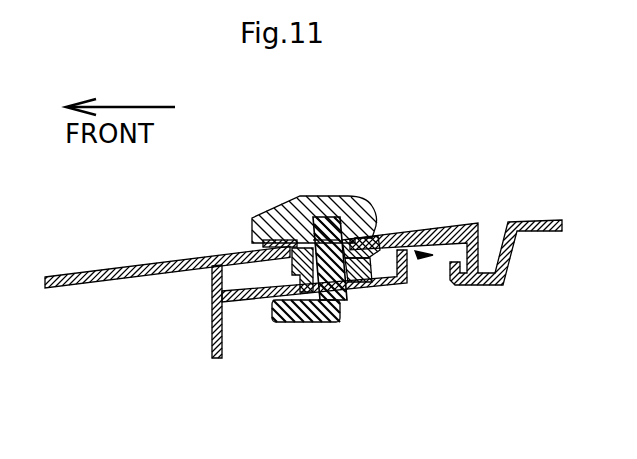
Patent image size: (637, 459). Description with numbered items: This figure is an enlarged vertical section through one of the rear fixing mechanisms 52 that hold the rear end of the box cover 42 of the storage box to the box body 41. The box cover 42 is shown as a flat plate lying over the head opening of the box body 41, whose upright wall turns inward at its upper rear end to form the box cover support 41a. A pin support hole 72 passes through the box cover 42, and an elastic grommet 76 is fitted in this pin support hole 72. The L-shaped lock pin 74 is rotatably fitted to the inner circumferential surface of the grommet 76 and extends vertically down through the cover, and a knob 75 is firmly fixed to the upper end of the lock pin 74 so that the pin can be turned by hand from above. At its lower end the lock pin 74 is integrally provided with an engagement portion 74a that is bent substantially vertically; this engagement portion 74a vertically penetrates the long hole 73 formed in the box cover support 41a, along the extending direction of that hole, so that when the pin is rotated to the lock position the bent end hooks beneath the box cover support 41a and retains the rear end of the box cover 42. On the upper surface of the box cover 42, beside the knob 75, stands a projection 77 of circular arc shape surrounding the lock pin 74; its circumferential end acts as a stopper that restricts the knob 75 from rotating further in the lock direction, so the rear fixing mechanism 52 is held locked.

The box body 41 is at (212, 333).
The box cover support 41a is at (380, 293).
The box cover 42 is at (100, 274).
The rear fixing mechanism 52 is at (309, 259).
The pin support hole 72 is at (372, 240).
The long hole 73 is at (347, 287).
The lock pin 74 is at (318, 215).
The engagement portion 74a is at (298, 322).
The knob 75 is at (275, 217).
The grommet 76 is at (300, 268).
The projection 77 is at (250, 242).